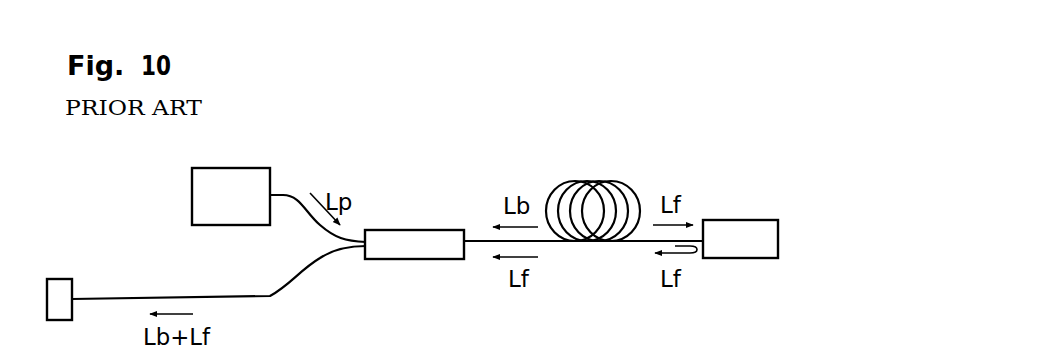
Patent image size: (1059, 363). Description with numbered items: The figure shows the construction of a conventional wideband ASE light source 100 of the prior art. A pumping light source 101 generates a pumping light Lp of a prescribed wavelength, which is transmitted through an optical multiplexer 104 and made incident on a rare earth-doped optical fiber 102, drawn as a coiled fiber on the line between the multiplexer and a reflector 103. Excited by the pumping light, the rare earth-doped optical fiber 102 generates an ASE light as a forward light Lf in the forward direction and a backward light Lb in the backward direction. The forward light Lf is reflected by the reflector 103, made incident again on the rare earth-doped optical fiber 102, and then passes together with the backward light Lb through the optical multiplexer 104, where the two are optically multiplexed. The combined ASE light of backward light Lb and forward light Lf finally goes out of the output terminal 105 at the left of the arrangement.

The optical fiber amplifier (prior art) 100 is at (392, 152).
The pumping light source 101 is at (213, 182).
The rare earth-doped optical fiber 102 is at (597, 185).
The reflector 103 is at (740, 225).
The optical multiplexer 104 is at (435, 237).
The output terminal 105 is at (53, 278).